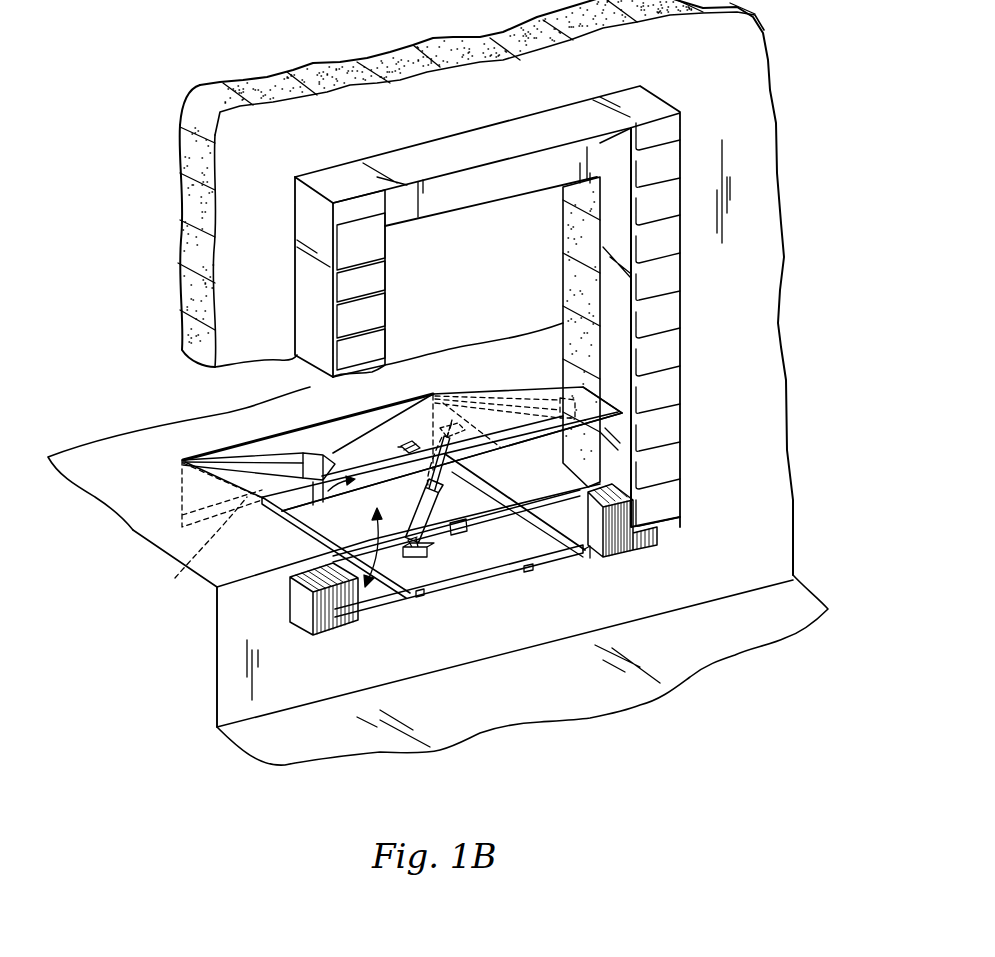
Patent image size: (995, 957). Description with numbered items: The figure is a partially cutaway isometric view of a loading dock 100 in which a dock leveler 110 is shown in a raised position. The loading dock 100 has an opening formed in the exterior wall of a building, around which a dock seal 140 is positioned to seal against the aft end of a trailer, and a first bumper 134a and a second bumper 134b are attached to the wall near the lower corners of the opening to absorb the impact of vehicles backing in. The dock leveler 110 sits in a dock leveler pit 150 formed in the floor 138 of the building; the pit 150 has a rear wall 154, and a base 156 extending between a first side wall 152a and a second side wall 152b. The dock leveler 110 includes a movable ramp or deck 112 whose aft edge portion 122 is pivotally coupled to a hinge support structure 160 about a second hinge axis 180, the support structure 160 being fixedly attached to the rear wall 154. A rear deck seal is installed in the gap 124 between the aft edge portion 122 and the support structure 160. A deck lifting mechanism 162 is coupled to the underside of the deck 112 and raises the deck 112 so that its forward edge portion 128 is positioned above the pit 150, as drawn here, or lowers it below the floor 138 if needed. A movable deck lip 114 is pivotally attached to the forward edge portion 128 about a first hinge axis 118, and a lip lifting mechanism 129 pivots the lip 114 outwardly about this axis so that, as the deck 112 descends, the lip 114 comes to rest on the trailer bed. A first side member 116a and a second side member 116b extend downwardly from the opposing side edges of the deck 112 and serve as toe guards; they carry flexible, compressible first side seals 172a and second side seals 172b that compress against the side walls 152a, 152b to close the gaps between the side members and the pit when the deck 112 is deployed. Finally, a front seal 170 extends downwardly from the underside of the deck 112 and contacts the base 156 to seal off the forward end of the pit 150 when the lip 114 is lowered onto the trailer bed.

The loading dock 100 is at (741, 274).
The dock leveler 110 is at (552, 386).
The deck 112 is at (415, 392).
The deck lip 114 is at (600, 413).
The first side member 116a is at (288, 460).
The second side member 116b is at (543, 390).
The first hinge axis 118 is at (316, 452).
The aft edge portion 122 is at (292, 455).
The gap 124 is at (227, 443).
The forward edge portion 128 is at (348, 405).
The lip lifting mechanism 129 is at (355, 520).
The first bumper 134a is at (325, 622).
The second bumper 134b is at (635, 548).
The floor 138 is at (122, 472).
The dock seal 140 is at (527, 177).
The dock leveler pit 150 is at (543, 489).
The first side wall 152a is at (250, 497).
The second side wall 152b is at (548, 520).
The rear wall 154 is at (135, 530).
The base 156 is at (472, 563).
The hinge support structure 160 is at (425, 430).
The deck lifting mechanism 162 is at (455, 540).
The front seal 170 is at (565, 430).
The first side seals 172a is at (165, 478).
The second side seals 172b is at (460, 423).
The second hinge axis 180 is at (207, 453).